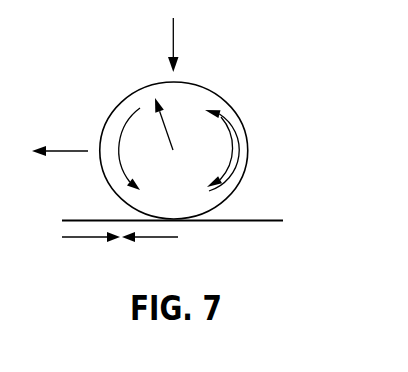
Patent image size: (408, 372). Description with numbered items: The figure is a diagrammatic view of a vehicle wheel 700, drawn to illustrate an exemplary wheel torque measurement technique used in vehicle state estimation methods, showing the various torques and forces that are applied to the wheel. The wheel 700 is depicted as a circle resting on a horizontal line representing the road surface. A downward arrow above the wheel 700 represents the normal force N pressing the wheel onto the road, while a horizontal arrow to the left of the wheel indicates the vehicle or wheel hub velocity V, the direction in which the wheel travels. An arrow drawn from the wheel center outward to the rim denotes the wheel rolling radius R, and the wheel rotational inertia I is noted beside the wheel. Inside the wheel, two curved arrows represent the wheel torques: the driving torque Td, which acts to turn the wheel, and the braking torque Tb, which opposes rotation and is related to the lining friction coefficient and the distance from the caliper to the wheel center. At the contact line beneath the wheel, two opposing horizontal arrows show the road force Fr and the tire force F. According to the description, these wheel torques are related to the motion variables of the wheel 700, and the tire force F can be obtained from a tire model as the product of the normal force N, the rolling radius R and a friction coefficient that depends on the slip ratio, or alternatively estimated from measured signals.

The vehicle wheel 700 is at (127, 110).
The normal force N is at (180, 45).
The vehicle/wheel hub velocity V is at (60, 142).
The wheel rolling radius R is at (167, 124).
The driving torque Td is at (213, 139).
The braking torque Tb is at (210, 161).
The wheel rotational inertia I is at (261, 145).
The road force Fr is at (91, 248).
The tire force F is at (150, 247).